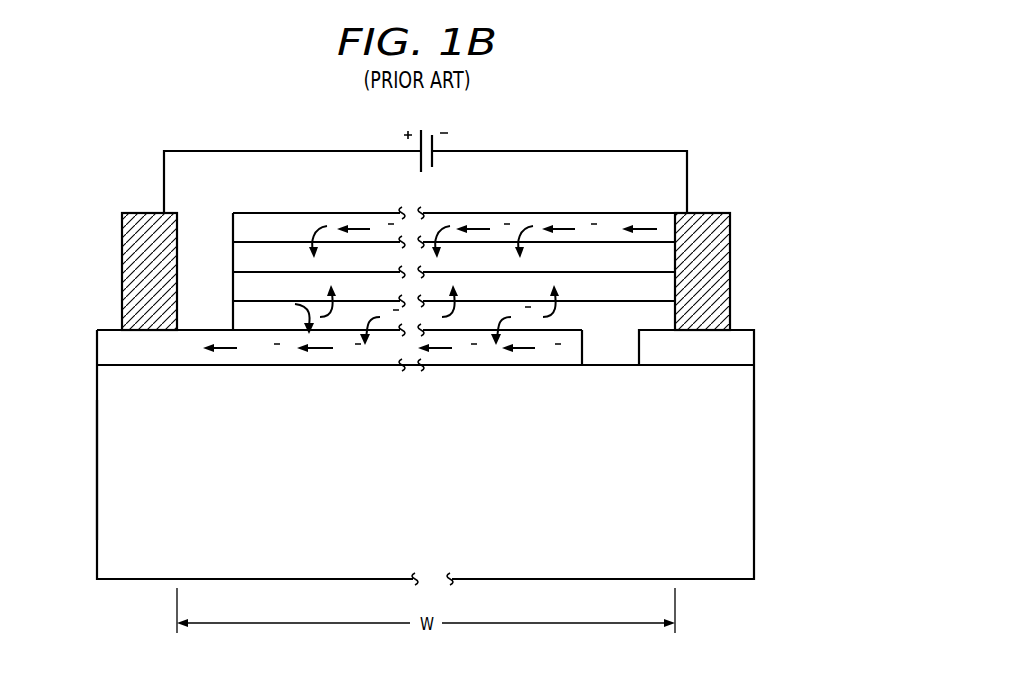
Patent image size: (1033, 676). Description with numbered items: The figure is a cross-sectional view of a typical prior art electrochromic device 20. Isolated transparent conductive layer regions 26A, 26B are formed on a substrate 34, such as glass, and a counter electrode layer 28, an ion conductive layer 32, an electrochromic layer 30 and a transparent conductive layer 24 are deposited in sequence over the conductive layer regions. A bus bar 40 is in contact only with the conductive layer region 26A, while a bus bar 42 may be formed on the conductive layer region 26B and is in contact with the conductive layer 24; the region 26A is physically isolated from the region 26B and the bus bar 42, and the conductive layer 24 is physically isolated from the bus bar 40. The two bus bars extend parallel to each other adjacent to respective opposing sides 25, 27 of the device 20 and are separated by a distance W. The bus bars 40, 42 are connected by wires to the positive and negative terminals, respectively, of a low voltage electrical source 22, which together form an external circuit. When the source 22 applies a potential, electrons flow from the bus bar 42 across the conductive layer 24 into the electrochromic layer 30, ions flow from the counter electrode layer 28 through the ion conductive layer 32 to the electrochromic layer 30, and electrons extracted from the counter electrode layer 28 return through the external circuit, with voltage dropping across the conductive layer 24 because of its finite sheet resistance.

The electrochromic device 20 is at (803, 160).
The low voltage electrical source 22 is at (302, 125).
The transparent conductive layer 24 is at (618, 220).
The side of the device 25 is at (97, 472).
The transparent conductive layer region 26A is at (108, 350).
The transparent conductive layer region 26B is at (742, 347).
The side of the device 27 is at (755, 465).
The counter electrode layer 28 is at (245, 316).
The electrochromic layer 30 is at (245, 257).
The ion conductive layer 32 is at (245, 287).
The substrate 34 is at (424, 494).
The bus bar 40 is at (132, 295).
The bus bar 42 is at (720, 272).